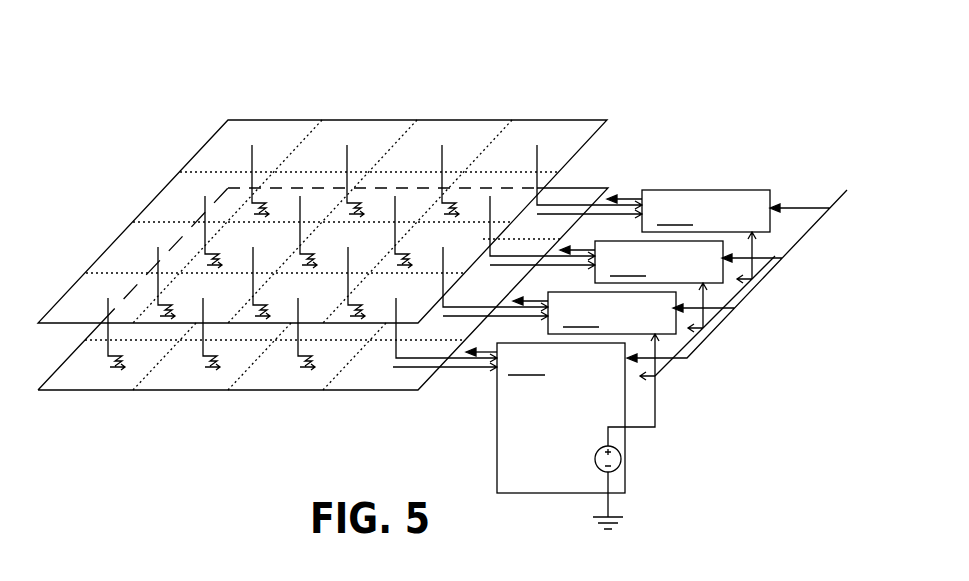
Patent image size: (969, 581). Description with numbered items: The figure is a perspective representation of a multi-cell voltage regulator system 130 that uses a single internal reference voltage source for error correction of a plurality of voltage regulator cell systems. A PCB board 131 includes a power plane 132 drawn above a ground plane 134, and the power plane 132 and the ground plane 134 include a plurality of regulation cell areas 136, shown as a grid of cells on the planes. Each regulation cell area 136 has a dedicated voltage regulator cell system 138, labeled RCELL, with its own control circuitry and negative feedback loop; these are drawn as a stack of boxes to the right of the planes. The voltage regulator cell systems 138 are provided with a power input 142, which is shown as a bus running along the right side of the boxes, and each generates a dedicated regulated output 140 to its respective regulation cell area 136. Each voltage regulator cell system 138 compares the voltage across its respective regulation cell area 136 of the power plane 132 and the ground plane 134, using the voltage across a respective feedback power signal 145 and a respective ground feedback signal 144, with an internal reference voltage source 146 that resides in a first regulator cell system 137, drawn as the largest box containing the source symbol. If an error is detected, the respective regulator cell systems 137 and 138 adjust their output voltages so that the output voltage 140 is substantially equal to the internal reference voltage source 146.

The multi-cell voltage regulator system 130 is at (433, 270).
The PCB board 131 is at (314, 227).
The power plane 132 is at (157, 146).
The ground plane 134 is at (84, 405).
The regulation cell area 136 is at (359, 142).
The first regulator cell system 137 is at (578, 431).
The voltage regulator cell system 138 is at (659, 262).
The regulated output 140 is at (529, 288).
The power input 142 is at (826, 182).
The ground feedback signal 144 is at (405, 378).
The feedback power signal 145 is at (468, 372).
The internal reference voltage source 146 is at (585, 435).